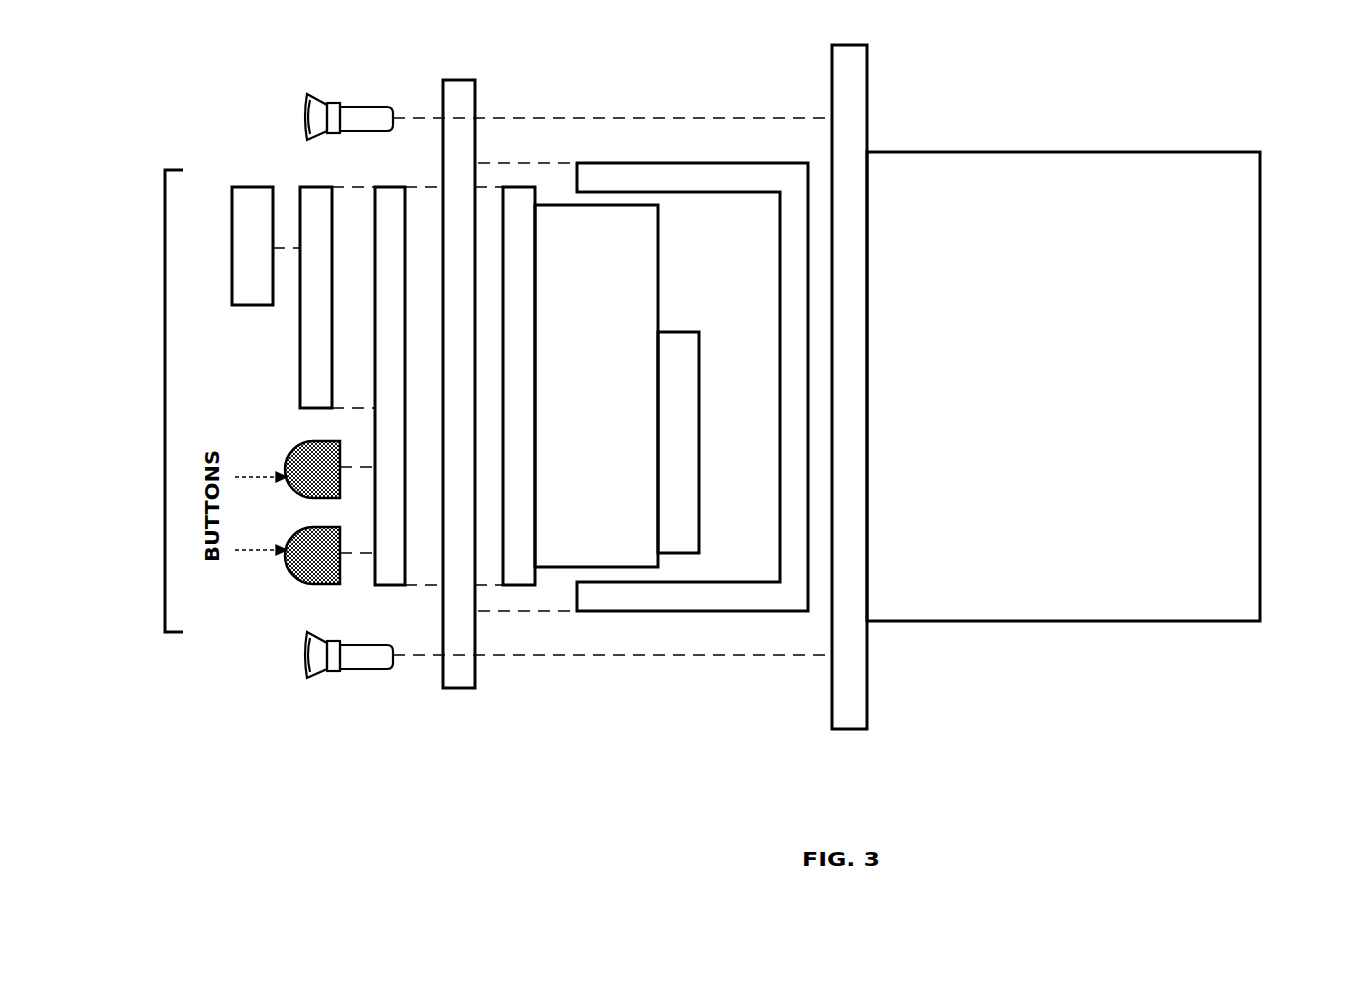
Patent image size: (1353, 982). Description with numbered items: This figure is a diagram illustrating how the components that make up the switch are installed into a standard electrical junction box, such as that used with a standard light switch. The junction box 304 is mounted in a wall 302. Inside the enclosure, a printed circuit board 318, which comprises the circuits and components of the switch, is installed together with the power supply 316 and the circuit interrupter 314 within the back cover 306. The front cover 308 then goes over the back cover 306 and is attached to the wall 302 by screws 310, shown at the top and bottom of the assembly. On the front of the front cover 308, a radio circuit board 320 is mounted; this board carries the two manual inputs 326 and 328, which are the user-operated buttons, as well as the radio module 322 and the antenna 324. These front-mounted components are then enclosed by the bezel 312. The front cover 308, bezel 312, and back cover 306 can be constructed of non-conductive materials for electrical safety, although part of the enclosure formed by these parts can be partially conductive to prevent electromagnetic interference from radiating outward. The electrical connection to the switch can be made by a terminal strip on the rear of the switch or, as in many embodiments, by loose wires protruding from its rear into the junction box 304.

The wall 302 is at (870, 93).
The junction box 304 is at (1262, 242).
The back cover 306 is at (710, 162).
The front cover 308 is at (457, 73).
The screws 310 is at (347, 98).
The bezel 312 is at (163, 290).
The circuit interrupter 314 is at (673, 330).
The power supply 316 is at (658, 267).
The printed circuit board 318 is at (522, 187).
The radio circuit board 320 is at (385, 188).
The radio module 322 is at (302, 187).
The antenna 324 is at (252, 306).
The manual input 326 is at (290, 448).
The manual input 328 is at (292, 575).